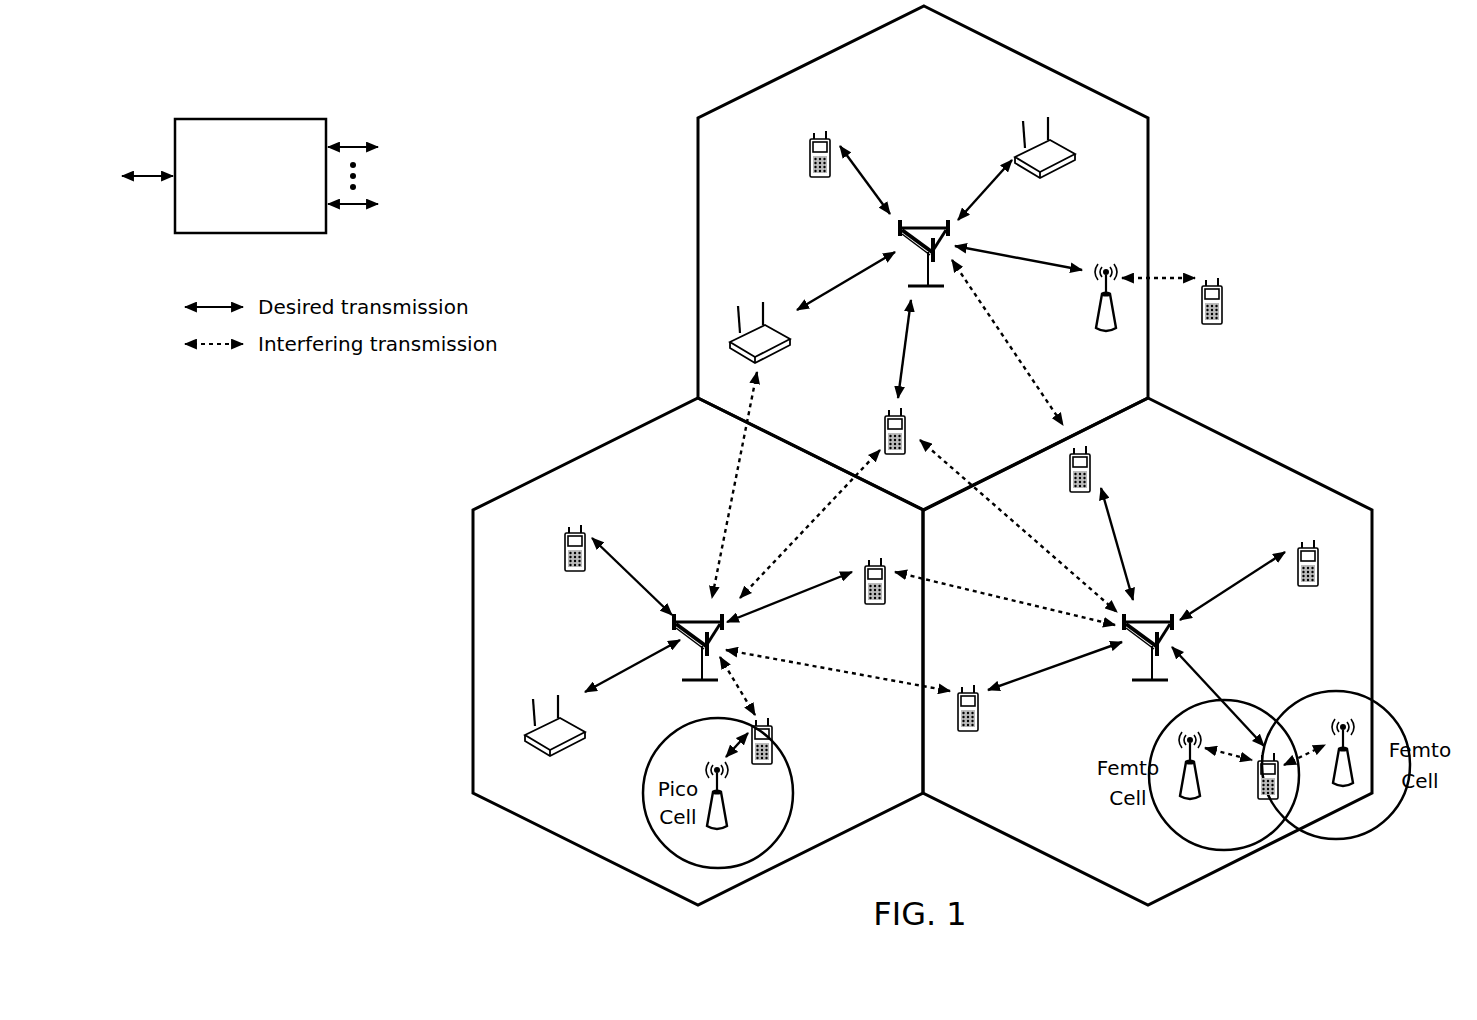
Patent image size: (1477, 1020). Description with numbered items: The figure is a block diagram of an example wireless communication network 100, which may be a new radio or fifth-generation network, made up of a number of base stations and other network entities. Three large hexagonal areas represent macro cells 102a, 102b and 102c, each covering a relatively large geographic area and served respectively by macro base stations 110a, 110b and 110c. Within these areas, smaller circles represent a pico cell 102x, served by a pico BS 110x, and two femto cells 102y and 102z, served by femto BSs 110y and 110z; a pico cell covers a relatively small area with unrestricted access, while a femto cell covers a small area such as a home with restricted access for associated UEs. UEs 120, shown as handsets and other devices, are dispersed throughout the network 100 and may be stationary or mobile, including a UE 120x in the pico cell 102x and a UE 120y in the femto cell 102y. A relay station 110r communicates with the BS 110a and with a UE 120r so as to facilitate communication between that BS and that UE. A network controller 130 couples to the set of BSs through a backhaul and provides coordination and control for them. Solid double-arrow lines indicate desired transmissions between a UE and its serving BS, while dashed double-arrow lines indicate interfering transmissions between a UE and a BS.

The wireless communication network 100 is at (1304, 75).
The macro cell 102a is at (1038, 64).
The macro cell 102b is at (583, 454).
The macro cell 102c is at (1260, 457).
The pico cell 102x is at (662, 735).
The femto cell 102y is at (1152, 740).
The femto cell 102z is at (1322, 680).
The macro base station 110a is at (918, 227).
The macro base station 110b is at (692, 621).
The macro base station 110c is at (1143, 621).
The pico base station 110x is at (726, 820).
The femto base station 110y is at (1199, 790).
The femto base station 110z is at (1352, 776).
The relay station 110r is at (1092, 318).
The user equipment 120 is at (810, 149).
The user equipment 120x is at (773, 734).
The user equipment 120y is at (1257, 793).
The user equipment 120r is at (1223, 318).
The network controller 130 is at (246, 119).